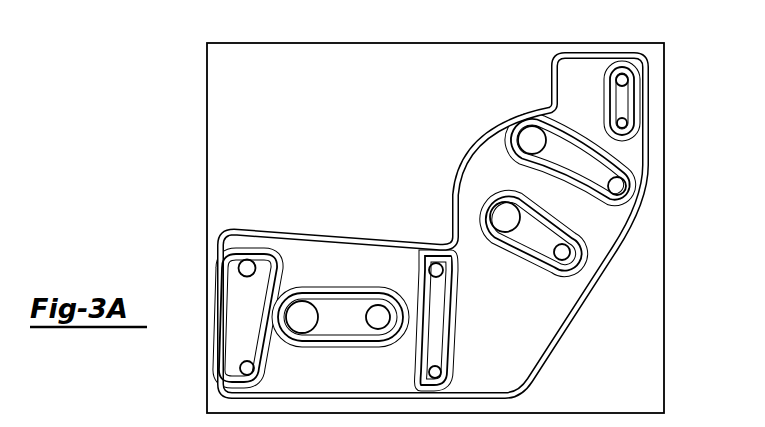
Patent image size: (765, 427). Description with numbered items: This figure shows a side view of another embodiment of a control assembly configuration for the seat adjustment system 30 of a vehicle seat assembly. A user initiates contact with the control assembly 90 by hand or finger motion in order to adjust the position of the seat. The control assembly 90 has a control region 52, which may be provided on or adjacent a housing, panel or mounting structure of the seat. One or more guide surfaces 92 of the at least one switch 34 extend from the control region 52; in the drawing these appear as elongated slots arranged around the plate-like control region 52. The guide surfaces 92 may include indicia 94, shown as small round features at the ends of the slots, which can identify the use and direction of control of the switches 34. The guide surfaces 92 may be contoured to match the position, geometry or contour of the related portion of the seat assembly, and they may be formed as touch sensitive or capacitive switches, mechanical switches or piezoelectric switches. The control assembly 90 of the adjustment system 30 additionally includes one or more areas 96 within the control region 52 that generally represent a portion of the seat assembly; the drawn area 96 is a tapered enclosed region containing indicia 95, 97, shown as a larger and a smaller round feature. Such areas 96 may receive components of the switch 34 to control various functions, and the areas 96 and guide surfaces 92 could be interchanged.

The seat adjustment system 30 is at (197, 197).
The switch 34 is at (642, 252).
The control region 52 is at (260, 128).
The control assembly 90 is at (298, 43).
The guide surfaces 92 is at (445, 334).
The indicia 94 is at (435, 372).
The indicia 95 is at (503, 217).
The areas 96 is at (531, 236).
The indicia 97 is at (563, 252).